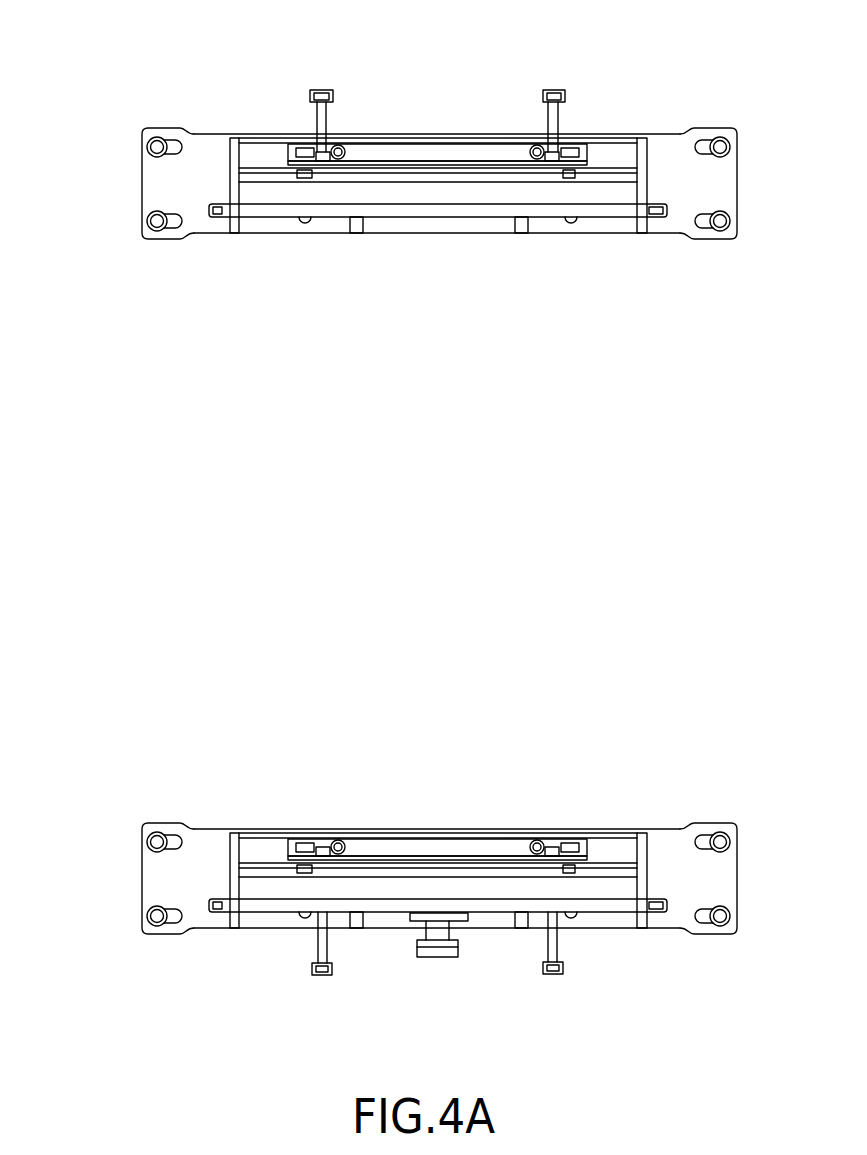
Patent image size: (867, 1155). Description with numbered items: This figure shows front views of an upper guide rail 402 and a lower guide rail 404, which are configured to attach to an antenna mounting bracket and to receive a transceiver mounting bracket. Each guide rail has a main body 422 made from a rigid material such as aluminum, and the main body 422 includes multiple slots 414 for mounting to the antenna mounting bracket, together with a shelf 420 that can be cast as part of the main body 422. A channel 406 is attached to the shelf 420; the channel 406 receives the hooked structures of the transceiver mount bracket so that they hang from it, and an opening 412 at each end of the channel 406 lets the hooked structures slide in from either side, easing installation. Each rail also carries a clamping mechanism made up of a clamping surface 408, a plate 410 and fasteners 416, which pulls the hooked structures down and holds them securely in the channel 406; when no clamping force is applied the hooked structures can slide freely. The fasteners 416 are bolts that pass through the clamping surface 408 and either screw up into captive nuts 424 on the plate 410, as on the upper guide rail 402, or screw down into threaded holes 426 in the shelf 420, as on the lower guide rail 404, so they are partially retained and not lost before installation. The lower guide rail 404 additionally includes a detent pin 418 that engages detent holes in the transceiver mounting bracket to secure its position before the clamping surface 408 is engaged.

The upper guide rail 402 is at (180, 270).
The lower guide rail 404 is at (105, 939).
The channel 406 is at (385, 190).
The clamping surface 408 is at (415, 162).
The plate 410 is at (490, 148).
The opening 412 is at (235, 185).
The slot 414 is at (700, 143).
The fastener 416 is at (319, 88).
The detent pin 418 is at (445, 957).
The shelf 420 is at (540, 213).
The main body 422 is at (655, 228).
The captive nut 424 is at (322, 148).
The threaded hole 426 is at (325, 215).